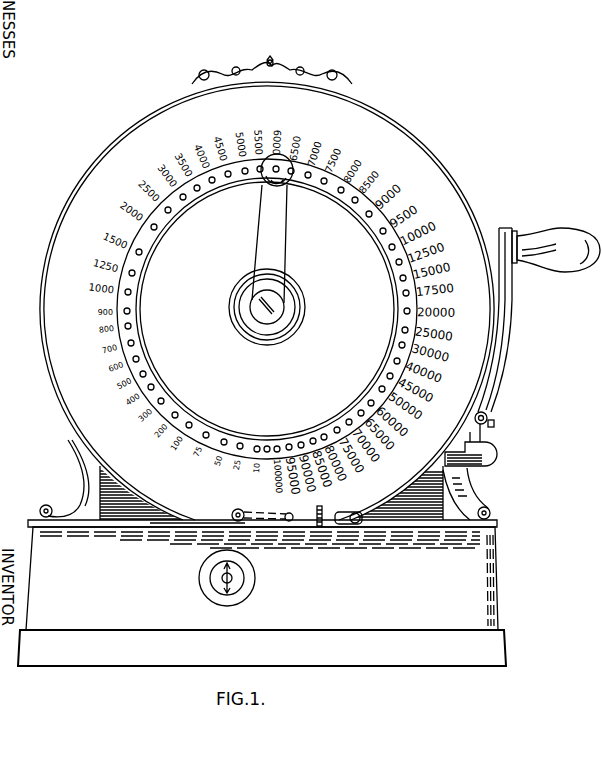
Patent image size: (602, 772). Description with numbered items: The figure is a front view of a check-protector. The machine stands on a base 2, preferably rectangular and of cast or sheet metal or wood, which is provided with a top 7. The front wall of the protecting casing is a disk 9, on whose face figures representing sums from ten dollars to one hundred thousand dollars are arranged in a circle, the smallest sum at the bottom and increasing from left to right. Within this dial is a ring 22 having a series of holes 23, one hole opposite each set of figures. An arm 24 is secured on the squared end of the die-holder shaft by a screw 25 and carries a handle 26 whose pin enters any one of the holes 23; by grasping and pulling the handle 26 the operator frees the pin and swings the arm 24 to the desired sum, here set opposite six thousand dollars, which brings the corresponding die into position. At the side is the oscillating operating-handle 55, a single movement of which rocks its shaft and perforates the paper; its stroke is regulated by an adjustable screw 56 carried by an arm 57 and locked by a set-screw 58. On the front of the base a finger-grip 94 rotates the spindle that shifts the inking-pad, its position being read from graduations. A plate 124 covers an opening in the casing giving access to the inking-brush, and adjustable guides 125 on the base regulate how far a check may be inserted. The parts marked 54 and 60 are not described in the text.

The base 2 is at (477, 622).
The top 7 is at (78, 510).
The disk 9 is at (377, 128).
The ring 22 is at (133, 350).
The holes 23 is at (131, 341).
The arm 24 is at (278, 247).
The screw 25 is at (292, 308).
The handle 26 is at (289, 186).
The bracket 54 is at (455, 486).
The operating-handle 55 is at (505, 358).
The adjustable screw 56 is at (488, 418).
The arm 57 is at (476, 433).
The set-screw 58 is at (494, 424).
The top plate 60 is at (197, 521).
The finger-grip 94 is at (210, 597).
The plate 124 is at (288, 517).
The adjustable guides 125 is at (336, 514).